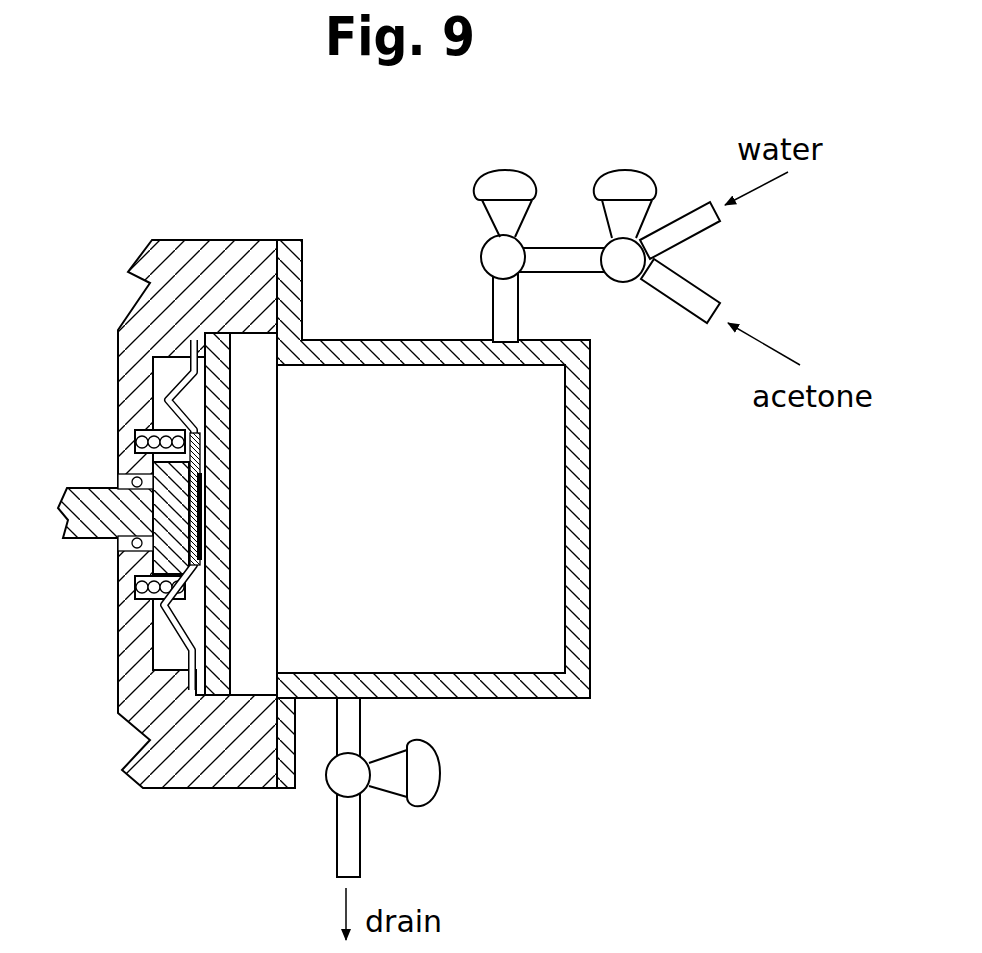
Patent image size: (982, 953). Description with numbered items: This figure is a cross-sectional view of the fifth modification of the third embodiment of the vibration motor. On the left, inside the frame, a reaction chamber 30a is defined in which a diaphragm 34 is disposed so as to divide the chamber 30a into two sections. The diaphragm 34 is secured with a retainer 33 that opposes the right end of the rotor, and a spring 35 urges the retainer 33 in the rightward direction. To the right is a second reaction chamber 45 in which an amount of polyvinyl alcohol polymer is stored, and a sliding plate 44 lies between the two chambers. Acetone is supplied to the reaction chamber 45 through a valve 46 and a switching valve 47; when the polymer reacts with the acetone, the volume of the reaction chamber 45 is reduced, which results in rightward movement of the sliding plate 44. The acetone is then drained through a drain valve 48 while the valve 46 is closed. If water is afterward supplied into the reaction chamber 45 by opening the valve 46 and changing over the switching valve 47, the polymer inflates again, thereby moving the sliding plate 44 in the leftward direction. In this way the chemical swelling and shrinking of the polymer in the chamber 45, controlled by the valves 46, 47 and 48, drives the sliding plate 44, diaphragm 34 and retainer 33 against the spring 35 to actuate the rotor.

The reaction chamber 30a is at (200, 410).
The retainer 33 is at (177, 527).
The diaphragm 34 is at (200, 620).
The spring 35 is at (118, 608).
The sliding plate 44 is at (228, 492).
The reaction chamber 45 is at (557, 502).
The valve 46 is at (485, 250).
The switching valve 47 is at (623, 277).
The drain valve 48 is at (367, 792).